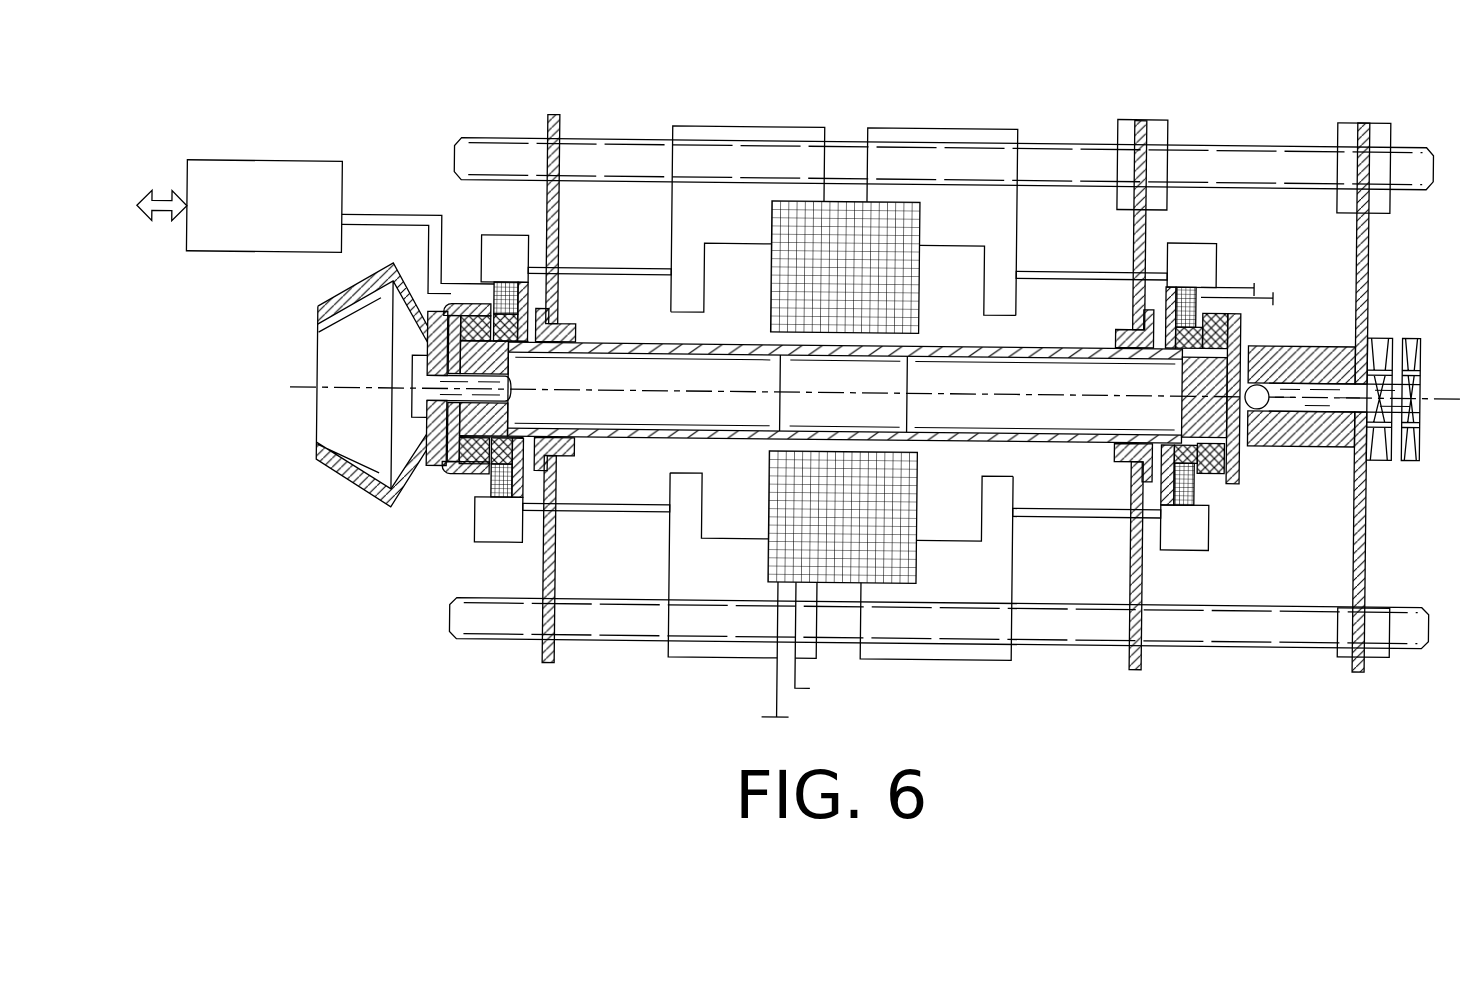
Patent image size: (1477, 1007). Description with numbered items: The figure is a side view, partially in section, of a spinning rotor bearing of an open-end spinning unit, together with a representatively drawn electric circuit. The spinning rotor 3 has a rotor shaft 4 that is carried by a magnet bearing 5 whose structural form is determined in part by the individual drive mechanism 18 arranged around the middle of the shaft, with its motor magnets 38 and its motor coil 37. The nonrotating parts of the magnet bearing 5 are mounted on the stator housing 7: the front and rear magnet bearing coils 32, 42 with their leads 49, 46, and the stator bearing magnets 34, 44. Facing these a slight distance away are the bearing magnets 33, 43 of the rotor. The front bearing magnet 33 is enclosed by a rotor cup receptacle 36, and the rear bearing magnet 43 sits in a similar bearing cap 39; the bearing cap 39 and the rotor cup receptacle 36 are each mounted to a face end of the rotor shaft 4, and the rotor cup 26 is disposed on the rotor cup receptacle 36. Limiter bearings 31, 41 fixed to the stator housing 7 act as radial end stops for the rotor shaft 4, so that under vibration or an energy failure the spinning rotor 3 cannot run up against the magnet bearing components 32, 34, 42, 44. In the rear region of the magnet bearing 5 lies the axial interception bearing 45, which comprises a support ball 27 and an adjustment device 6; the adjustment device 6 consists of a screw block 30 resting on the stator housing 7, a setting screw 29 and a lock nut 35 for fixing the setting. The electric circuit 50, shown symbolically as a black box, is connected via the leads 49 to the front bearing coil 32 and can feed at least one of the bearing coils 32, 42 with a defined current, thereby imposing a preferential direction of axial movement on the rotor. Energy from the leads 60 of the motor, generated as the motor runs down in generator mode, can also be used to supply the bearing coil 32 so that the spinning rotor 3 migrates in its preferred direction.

The spinning rotor 3 is at (379, 413).
The rotor shaft 4 is at (844, 530).
The magnet bearing 5 is at (942, 372).
The adjustment device 6 is at (1414, 418).
The stator housing 7 is at (1211, 235).
The individual drive mechanism 18 is at (843, 371).
The rotor cup 26 is at (352, 485).
The support ball 27 is at (1259, 404).
The setting screw 29 is at (1412, 332).
The screw block 30 is at (1306, 430).
The limiter bearing 31 is at (575, 326).
The magnet bearing coil 32 is at (494, 484).
The bearing magnet 33 is at (456, 470).
The bearing magnet 34 is at (497, 289).
The lock nut 35 is at (1371, 333).
The rotor cup receptacle 36 is at (454, 312).
The motor coil 37 is at (895, 565).
The motor magnets 38 is at (810, 401).
The bearing cap 39 is at (1236, 346).
The limiter bearing 41 is at (1115, 450).
The magnet bearing coil 42 is at (1181, 280).
The bearing magnet 43 is at (1218, 468).
The bearing magnet 44 is at (1209, 318).
The axial interception bearing 45 is at (1292, 556).
The leads 46 is at (1240, 288).
The leads 49 is at (378, 225).
The electric circuit 50 is at (282, 224).
The leads of the motor 60 is at (800, 672).